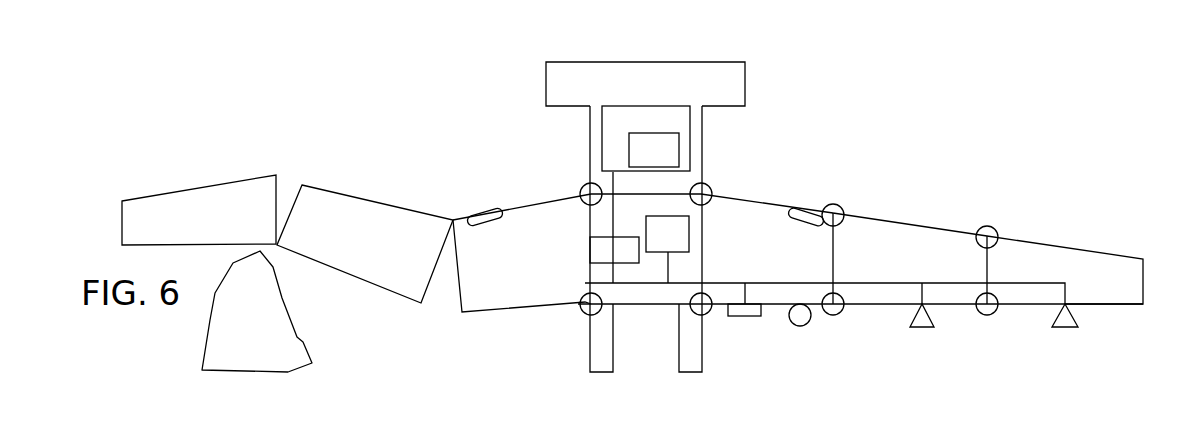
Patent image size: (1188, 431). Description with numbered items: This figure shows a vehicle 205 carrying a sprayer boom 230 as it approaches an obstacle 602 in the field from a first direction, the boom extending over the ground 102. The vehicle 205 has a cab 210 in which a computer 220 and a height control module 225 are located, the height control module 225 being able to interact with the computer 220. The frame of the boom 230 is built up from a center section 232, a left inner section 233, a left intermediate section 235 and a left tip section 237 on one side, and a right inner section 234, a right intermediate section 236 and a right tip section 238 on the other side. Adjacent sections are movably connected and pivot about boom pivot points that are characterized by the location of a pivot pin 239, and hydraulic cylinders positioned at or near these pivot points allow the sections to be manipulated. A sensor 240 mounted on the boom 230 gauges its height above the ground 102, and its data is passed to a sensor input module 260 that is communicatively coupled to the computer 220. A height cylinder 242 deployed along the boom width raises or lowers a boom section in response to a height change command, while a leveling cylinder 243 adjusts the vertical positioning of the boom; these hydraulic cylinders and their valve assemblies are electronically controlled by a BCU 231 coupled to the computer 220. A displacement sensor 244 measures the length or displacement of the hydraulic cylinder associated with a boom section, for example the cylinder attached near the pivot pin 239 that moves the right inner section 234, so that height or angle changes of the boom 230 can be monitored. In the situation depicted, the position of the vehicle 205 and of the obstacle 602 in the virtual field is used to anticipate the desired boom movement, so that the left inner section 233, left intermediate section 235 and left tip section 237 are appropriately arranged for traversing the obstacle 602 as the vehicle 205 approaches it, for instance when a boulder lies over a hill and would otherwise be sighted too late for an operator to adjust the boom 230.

The ground 102 is at (636, 427).
The vehicle 205 is at (767, 72).
The cab 210 is at (522, 105).
The computer 220 is at (623, 128).
The height control module 225 is at (634, 161).
The sprayer boom 230 is at (356, 217).
The BCU 231 is at (648, 245).
The center section 232 is at (658, 305).
The left inner section 233 is at (535, 198).
The right inner section 234 is at (753, 198).
The left intermediate section 235 is at (352, 195).
The right intermediate section 236 is at (925, 225).
The left tip section 237 is at (178, 188).
The right tip section 238 is at (1070, 247).
The pivot pin 239 is at (582, 190).
The sensor 240 is at (1122, 330).
The height cylinder 242 is at (820, 338).
The leveling cylinder 243 is at (483, 212).
The displacement sensor 244 is at (754, 332).
The sensor input module 260 is at (595, 261).
The obstacle 602 is at (285, 332).